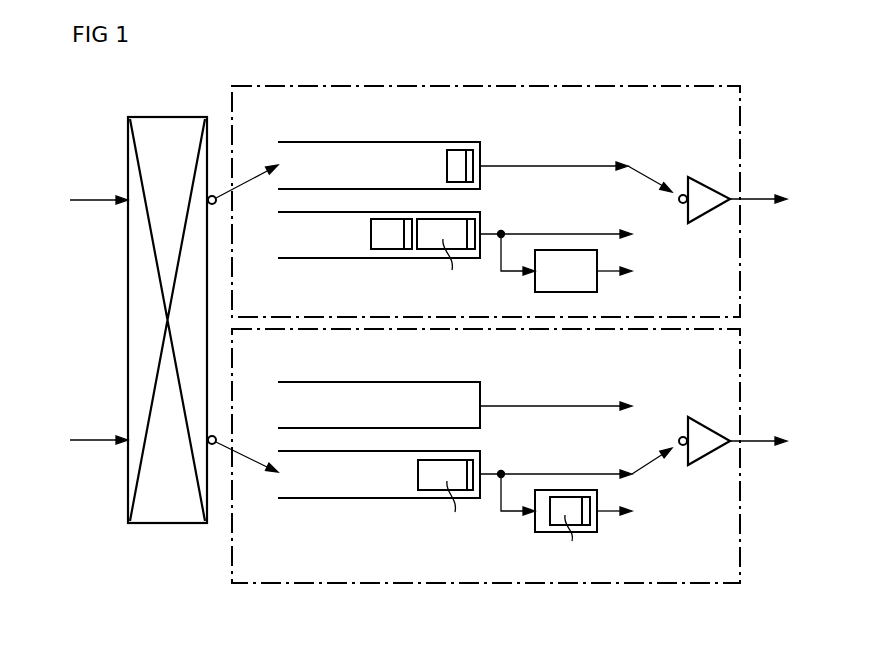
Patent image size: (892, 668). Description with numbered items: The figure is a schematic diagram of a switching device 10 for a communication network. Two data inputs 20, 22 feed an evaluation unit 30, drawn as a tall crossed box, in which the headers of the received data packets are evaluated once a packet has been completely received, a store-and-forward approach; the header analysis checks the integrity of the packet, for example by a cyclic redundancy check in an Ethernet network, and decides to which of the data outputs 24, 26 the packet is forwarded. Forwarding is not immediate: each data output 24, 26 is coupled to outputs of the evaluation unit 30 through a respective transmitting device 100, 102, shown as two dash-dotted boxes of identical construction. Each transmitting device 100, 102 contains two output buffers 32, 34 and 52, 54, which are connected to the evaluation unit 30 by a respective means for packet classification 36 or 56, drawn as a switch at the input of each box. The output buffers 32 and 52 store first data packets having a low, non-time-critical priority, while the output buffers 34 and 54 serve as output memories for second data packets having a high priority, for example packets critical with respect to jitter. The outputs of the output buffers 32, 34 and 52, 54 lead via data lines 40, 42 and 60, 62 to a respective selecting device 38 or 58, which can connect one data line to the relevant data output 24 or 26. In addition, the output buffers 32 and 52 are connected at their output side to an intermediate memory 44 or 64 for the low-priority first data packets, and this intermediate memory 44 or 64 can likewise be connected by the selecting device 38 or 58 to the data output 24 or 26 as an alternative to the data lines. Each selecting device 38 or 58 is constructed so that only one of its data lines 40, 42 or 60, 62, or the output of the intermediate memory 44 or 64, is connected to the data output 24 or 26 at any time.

The switching device 10 is at (729, 63).
The data input 20 is at (93, 437).
The data input 22 is at (93, 197).
The data output 24 is at (755, 437).
The data output 26 is at (755, 195).
The evaluation unit 30 is at (168, 525).
The output buffer 32 is at (325, 490).
The output buffer 34 is at (380, 392).
The means for packet classification 36 is at (249, 458).
The selecting device 38 is at (645, 465).
The data line 40 is at (555, 400).
The data line 42 is at (555, 470).
The intermediate memory 44 is at (597, 500).
The output buffer 52 is at (325, 250).
The output buffer 54 is at (380, 152).
The means for packet classification 56 is at (249, 182).
The selecting device 58 is at (653, 175).
The data line 60 is at (555, 160).
The data line 62 is at (555, 230).
The intermediate memory 64 is at (597, 260).
The transmitting device 100 is at (462, 584).
The transmitting device 102 is at (500, 86).